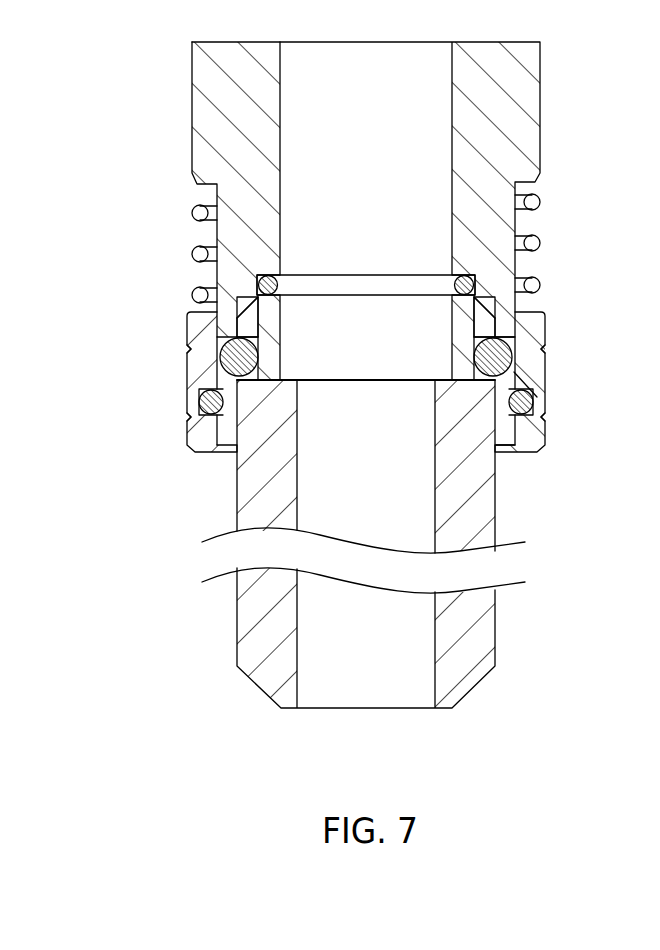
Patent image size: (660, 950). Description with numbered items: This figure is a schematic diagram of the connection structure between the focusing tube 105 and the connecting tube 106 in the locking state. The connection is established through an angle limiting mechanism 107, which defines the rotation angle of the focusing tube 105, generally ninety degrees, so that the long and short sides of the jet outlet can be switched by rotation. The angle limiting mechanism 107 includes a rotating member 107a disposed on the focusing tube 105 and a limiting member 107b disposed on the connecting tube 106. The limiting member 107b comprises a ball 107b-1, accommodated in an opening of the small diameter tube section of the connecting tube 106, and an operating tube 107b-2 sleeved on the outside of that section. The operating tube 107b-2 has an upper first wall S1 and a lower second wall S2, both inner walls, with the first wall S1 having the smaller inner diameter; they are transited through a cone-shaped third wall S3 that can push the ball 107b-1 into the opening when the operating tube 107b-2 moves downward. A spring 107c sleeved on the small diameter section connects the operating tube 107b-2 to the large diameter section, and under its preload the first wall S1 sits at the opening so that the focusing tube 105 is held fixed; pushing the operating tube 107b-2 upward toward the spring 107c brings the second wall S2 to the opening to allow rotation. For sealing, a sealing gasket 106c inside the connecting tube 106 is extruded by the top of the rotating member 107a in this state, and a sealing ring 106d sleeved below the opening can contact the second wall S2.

The focusing tube 105 is at (495, 620).
The connecting tube 106 is at (540, 117).
The sealing gasket 106c is at (492, 283).
The sealing ring 106d is at (207, 417).
The angle limiting mechanism 107 is at (152, 334).
The rotating member 107a is at (259, 316).
The limiting member 107b is at (170, 427).
The ball 107b-1 is at (217, 363).
The operating tube 107b-2 is at (186, 360).
The spring 107c is at (193, 252).
The first wall S1 is at (514, 336).
The second wall S2 is at (520, 445).
The third wall S3 is at (537, 397).